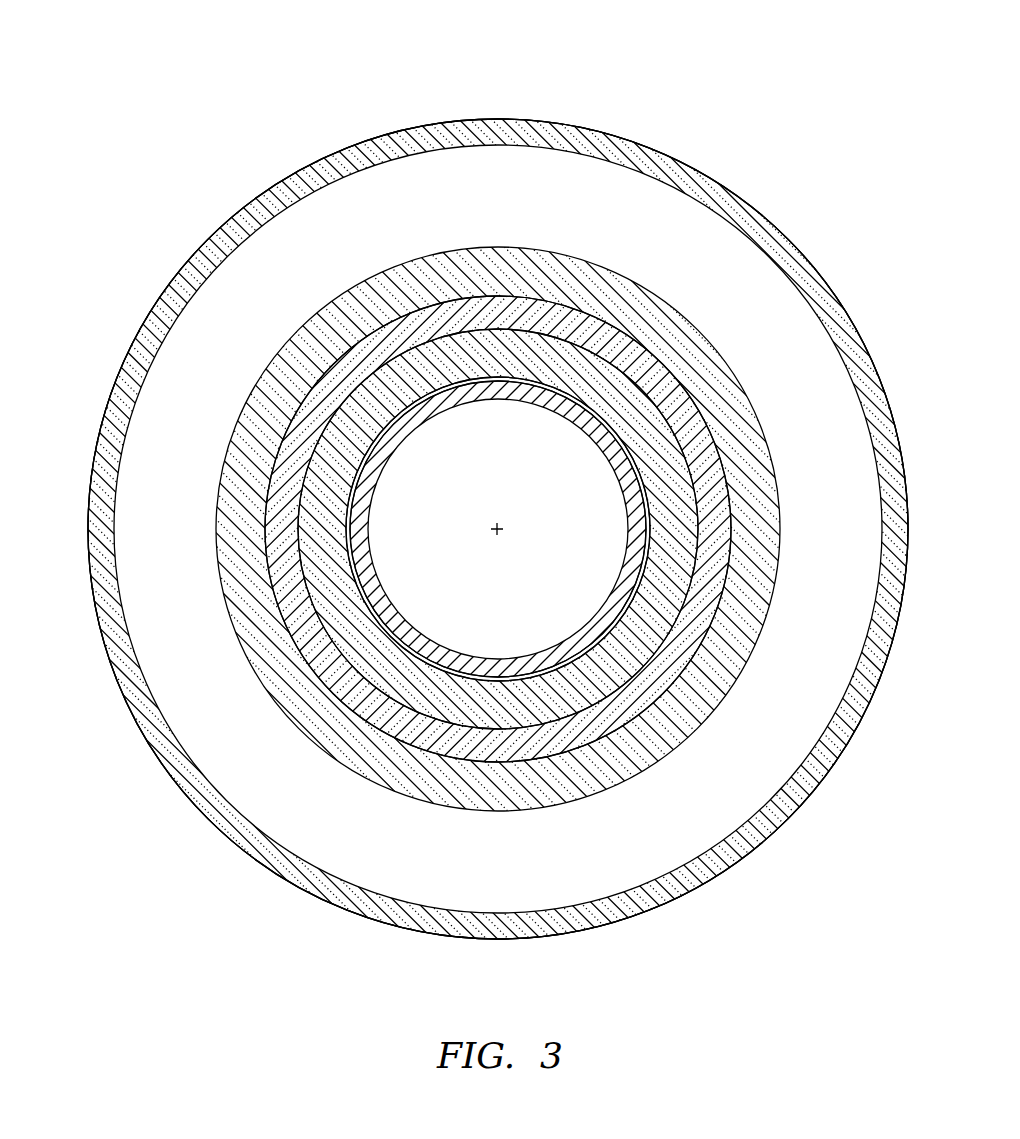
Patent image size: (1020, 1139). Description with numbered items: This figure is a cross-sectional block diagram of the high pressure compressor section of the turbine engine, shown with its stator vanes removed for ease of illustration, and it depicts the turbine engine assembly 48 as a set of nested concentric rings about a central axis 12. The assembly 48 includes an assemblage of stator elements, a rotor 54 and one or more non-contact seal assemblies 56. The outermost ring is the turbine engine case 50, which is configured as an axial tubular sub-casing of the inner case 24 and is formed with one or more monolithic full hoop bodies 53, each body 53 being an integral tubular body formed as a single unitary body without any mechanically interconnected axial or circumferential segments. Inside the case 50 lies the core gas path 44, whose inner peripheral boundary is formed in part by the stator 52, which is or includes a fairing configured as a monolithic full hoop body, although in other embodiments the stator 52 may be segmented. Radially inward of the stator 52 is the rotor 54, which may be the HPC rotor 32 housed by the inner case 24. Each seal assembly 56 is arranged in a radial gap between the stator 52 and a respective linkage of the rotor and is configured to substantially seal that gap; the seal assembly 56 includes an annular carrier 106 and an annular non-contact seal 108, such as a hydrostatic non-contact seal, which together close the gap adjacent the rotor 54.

The central axis 12 is at (502, 528).
The inner case 24 is at (510, 529).
The HPC rotor 32 is at (496, 529).
The core gas path 44 is at (515, 220).
The assembly 48 is at (740, 101).
The turbine engine case 50 is at (834, 284).
The stator 52 is at (777, 460).
The monolithic full hoop body 53 is at (781, 242).
The rotor 54 is at (428, 618).
The non-contact seal assembly 56 is at (415, 770).
The annular carrier 106 is at (338, 699).
The annular non-contact seal 108 is at (364, 561).